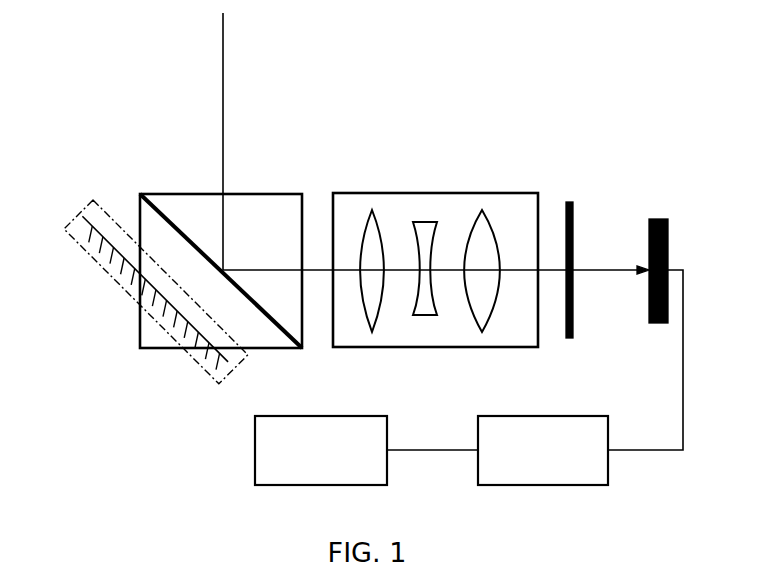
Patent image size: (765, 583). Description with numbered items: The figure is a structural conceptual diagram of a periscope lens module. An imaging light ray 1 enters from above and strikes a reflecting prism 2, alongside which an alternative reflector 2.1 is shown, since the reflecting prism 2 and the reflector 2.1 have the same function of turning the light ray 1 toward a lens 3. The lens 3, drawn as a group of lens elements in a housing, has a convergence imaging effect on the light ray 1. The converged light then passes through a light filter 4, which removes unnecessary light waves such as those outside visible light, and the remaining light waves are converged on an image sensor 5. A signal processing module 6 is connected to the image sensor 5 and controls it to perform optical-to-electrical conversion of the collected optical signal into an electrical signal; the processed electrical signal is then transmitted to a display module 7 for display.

The imaging light ray 1 is at (436, 143).
The reflecting prism 2 is at (192, 212).
The reflector 2.1 is at (88, 228).
The lens 3 is at (392, 202).
The light filter 4 is at (568, 198).
The image sensor 5 is at (658, 215).
The signal processing module 6 is at (543, 450).
The display module 7 is at (321, 450).